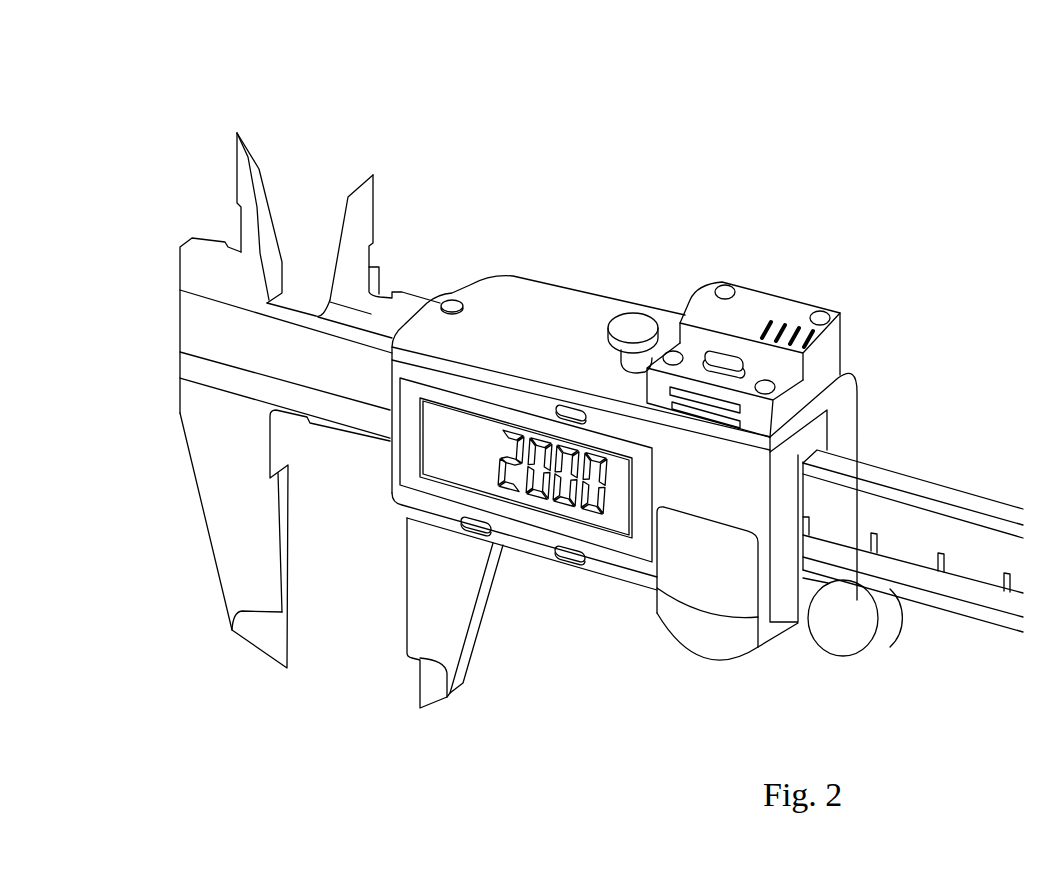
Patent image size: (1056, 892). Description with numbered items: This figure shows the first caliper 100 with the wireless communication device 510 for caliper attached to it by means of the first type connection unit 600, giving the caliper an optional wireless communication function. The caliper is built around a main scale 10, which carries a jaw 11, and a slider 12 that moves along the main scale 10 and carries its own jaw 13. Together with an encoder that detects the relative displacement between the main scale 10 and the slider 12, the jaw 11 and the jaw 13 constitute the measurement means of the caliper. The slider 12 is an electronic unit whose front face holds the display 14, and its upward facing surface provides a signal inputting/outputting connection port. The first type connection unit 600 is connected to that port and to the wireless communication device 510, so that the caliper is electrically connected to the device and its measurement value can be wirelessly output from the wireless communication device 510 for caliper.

The first caliper 100 is at (946, 354).
The main scale 10 is at (963, 597).
The jaw of the main scale 11 is at (245, 588).
The slider 12 is at (505, 332).
The jaw of the slider 13 is at (363, 197).
The display 14 is at (447, 477).
The wireless communication device for caliper 510 is at (565, 305).
The first type connection unit 600 is at (765, 303).